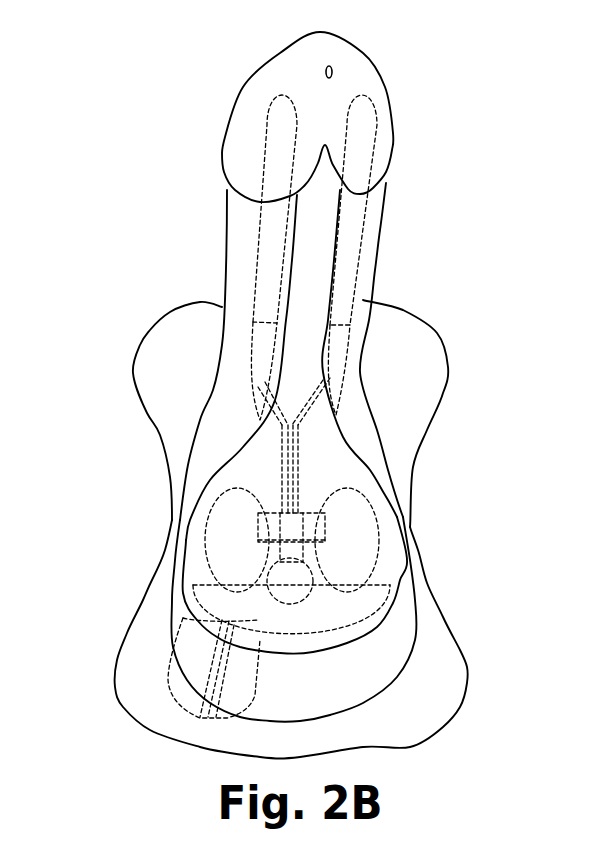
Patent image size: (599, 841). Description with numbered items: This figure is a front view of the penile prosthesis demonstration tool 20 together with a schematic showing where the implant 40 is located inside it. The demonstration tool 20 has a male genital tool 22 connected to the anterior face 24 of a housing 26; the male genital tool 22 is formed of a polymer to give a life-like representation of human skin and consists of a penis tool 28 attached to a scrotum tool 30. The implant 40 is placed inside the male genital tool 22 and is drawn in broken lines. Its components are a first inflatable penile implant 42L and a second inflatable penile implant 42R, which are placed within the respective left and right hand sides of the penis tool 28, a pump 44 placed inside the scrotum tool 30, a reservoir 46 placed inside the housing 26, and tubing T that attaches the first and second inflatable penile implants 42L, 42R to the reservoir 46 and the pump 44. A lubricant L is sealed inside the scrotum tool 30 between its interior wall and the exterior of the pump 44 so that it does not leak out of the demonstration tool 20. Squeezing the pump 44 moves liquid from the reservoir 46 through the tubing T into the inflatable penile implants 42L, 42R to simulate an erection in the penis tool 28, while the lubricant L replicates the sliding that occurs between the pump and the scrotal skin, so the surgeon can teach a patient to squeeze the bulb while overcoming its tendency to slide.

The penile prosthesis demonstration tool 20 is at (126, 238).
The male genital tool 22 is at (208, 352).
The anterior face 24 is at (443, 678).
The housing 26 is at (449, 328).
The penis tool 28 is at (375, 224).
The scrotum tool 30 is at (385, 582).
The implant 40 is at (320, 442).
The second inflatable penile implant 42R is at (265, 142).
The first inflatable penile implant 42L is at (373, 136).
The pump 44 is at (305, 600).
The reservoir 46 is at (170, 660).
The tubing T is at (287, 450).
The lubricant L is at (363, 606).